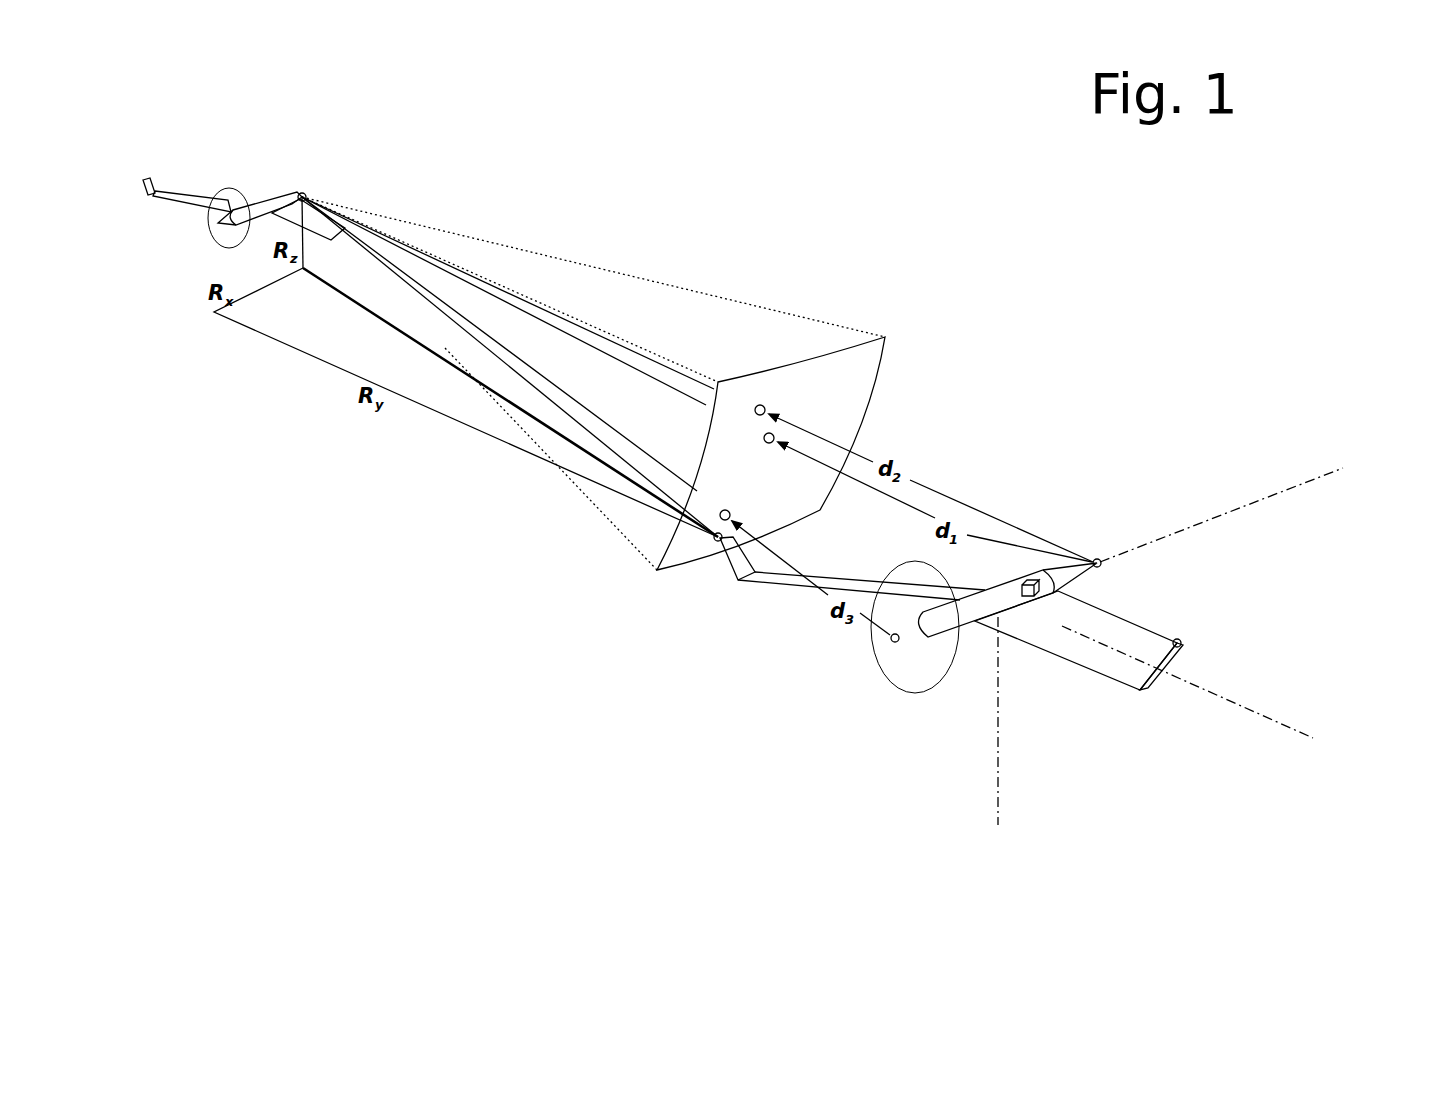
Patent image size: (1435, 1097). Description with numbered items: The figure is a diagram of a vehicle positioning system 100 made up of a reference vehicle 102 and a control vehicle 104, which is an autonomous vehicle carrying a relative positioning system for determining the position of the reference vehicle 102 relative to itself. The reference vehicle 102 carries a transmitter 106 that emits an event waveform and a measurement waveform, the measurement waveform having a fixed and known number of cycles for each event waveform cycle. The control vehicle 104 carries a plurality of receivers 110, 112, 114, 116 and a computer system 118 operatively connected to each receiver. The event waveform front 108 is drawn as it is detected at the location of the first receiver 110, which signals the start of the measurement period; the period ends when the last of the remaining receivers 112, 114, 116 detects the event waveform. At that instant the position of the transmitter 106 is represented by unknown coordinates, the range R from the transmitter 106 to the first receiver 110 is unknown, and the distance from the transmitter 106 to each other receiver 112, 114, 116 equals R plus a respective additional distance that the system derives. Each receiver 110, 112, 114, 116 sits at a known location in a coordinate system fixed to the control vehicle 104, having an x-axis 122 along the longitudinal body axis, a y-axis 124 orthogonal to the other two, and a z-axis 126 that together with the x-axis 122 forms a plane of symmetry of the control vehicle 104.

The vehicle positioning system 100 is at (1199, 217).
The reference vehicle 102 is at (218, 168).
The control vehicle 104 is at (1072, 668).
The transmitter 106 is at (305, 180).
The event waveform front 108 is at (885, 372).
The receiver 110 is at (713, 546).
The receiver 112 is at (1182, 636).
The receiver 114 is at (1099, 557).
The receiver 116 is at (890, 647).
The computer system 118 is at (1024, 572).
The x-axis 122 is at (1315, 486).
The y-axis 124 is at (1283, 735).
The z-axis 126 is at (998, 825).